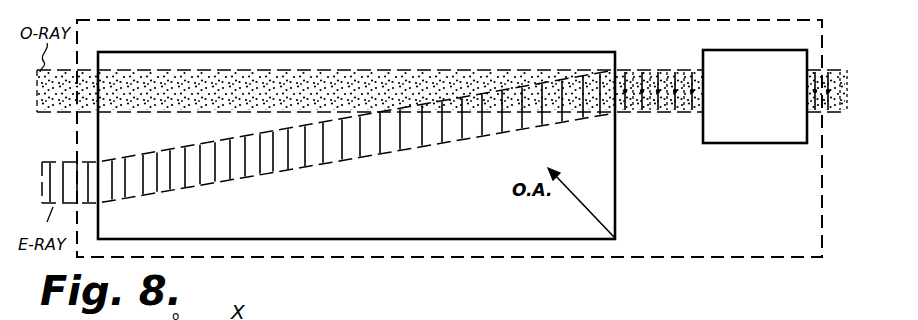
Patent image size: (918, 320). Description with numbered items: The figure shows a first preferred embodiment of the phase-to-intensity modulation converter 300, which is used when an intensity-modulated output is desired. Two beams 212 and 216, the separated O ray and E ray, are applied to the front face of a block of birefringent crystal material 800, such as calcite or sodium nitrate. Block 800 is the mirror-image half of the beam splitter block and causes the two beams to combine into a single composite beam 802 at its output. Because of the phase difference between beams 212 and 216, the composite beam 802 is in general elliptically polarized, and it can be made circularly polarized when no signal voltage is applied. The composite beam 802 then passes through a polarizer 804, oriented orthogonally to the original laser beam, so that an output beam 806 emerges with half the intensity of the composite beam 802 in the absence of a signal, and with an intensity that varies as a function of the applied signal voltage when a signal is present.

The phase-to-intensity modulation converter 300 is at (449, 128).
The block of birefringent crystal material 800 is at (269, 52).
The composite beam 802 is at (628, 70).
The polarizer 804 is at (723, 50).
The output beam 806 is at (840, 70).
The beam 216 is at (62, 115).
The beam 212 is at (53, 161).